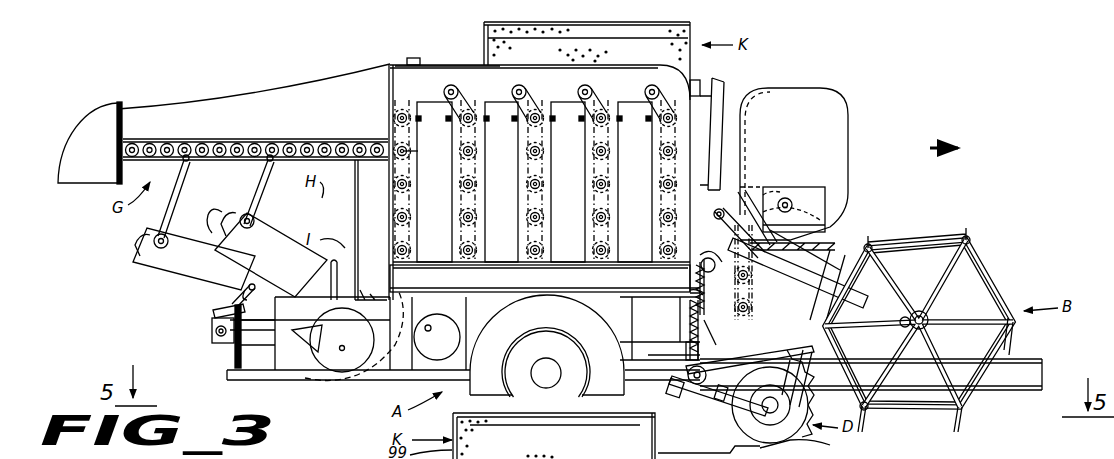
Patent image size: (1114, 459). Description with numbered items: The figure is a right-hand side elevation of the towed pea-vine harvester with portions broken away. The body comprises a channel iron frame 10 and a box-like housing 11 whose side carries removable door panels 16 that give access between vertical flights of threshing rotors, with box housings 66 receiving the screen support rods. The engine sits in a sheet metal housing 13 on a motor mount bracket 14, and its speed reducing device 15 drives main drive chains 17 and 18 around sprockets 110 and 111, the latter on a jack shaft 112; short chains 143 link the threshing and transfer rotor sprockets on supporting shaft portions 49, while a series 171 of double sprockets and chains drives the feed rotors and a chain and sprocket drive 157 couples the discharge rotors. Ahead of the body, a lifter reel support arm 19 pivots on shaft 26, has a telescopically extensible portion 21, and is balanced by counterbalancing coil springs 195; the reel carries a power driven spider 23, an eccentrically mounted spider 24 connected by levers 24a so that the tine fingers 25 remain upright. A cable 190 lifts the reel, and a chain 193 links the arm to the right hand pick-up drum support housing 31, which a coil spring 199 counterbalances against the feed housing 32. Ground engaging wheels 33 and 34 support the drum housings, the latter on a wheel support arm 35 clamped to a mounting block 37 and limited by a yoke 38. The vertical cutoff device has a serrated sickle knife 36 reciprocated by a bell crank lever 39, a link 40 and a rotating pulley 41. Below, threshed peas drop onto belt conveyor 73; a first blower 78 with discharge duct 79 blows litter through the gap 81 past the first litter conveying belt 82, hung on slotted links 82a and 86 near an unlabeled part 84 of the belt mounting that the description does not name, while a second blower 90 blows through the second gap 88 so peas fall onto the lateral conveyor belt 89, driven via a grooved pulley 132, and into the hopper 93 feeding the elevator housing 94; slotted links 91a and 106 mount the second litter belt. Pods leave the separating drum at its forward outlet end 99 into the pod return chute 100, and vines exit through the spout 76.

The channel iron frame 10 is at (290, 372).
The box-like housing 11 is at (478, 82).
The sheet metal housing 13 is at (794, 164).
The motor mount bracket 14 is at (828, 242).
The speed reducing device 15 is at (824, 198).
The removable door panels 16 is at (545, 160).
The main drive chain 17 is at (763, 190).
The main drive chain 18 is at (790, 198).
The lifter reel support arm 19 is at (830, 262).
The telescopically extensible portion 21 is at (932, 290).
The power driven spider 23 is at (928, 248).
The eccentrically mounted spider 24 is at (985, 290).
The levers 24a is at (876, 240).
The tine fingers 25 is at (1012, 340).
The shaft 26 is at (790, 222).
The right hand pick-up drum support housing 31 is at (712, 412).
The feed housing 32 is at (688, 315).
The ground engaging wheel 33 is at (753, 449).
The second ground engaging wheel 34 is at (750, 420).
The wheel support arm 35 is at (712, 402).
The serrated sickle knife 36 is at (812, 415).
The mounting block 37 is at (672, 394).
The yoke 38 is at (728, 380).
The bell crank lever 39 is at (805, 348).
The link 40 is at (785, 355).
The rotating pulley 41 is at (672, 360).
The supporting shaft portion 49 is at (406, 155).
The box housings 66 is at (486, 118).
The belt conveyor 73 is at (470, 291).
The spout 76 is at (85, 183).
The first blower 78 is at (437, 337).
The discharge duct 79 is at (400, 365).
The gap 81 is at (343, 280).
The first litter conveying belt 82 is at (242, 216).
The slotted links 82a is at (325, 268).
The pivot stop 84 is at (220, 205).
The slotted links 86 is at (262, 182).
The second gap 88 is at (240, 300).
The lateral conveyor belt 89 is at (233, 350).
The second blower 90 is at (333, 340).
The slotted links 91a is at (213, 312).
The hopper 93 is at (262, 340).
The elevator housing 94 is at (292, 378).
The forward outlet end 99 is at (695, 112).
The pod return chute 100 is at (728, 118).
The slotted links 106 is at (190, 171).
The sprocket 110 is at (727, 224).
The sprocket 111 is at (690, 276).
The jack shaft 112 is at (738, 222).
The grooved pulley 132 is at (212, 332).
The short chains 143 is at (462, 122).
The chain and sprocket drive 157 is at (355, 147).
The series of double sprockets and short chains 171 is at (690, 330).
The cable 190 is at (1030, 360).
The chain 193 is at (798, 273).
The counterbalancing coil springs 195 is at (705, 258).
The coil spring 199 is at (706, 350).